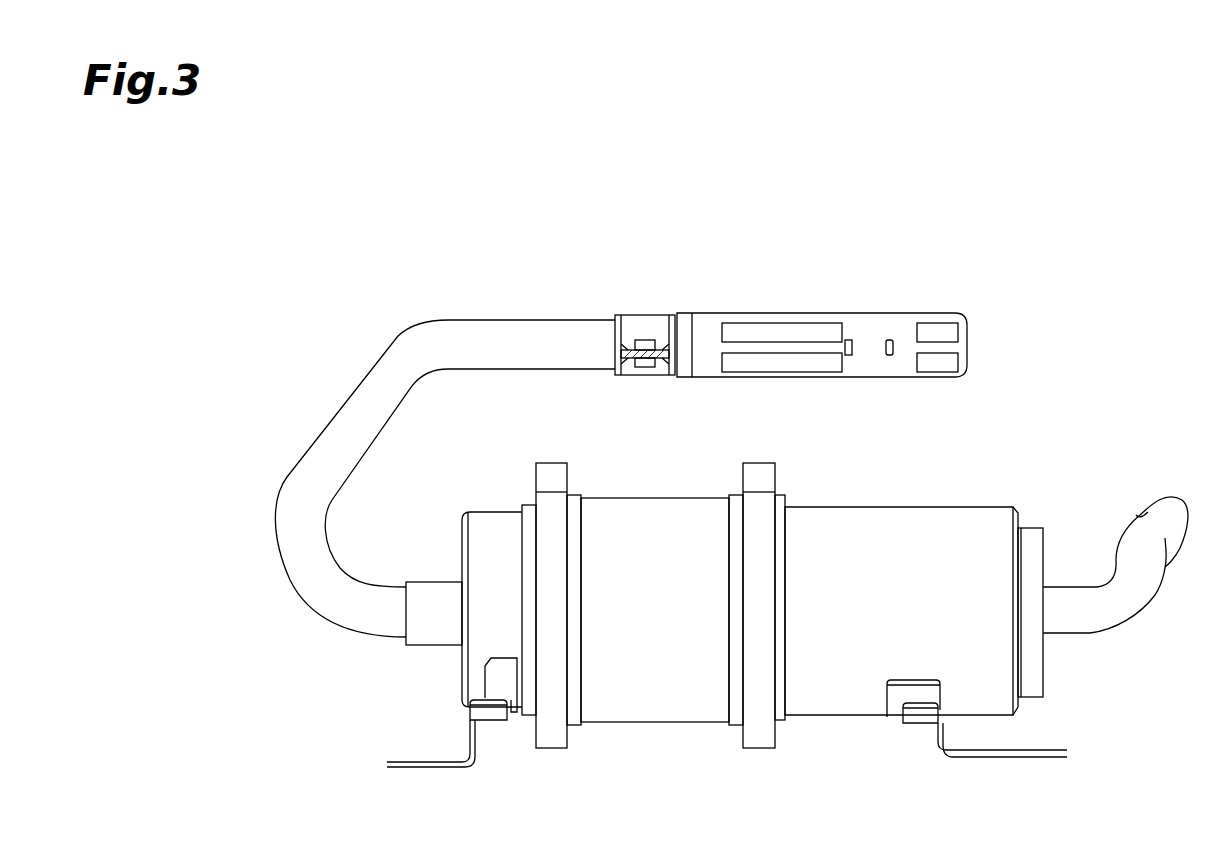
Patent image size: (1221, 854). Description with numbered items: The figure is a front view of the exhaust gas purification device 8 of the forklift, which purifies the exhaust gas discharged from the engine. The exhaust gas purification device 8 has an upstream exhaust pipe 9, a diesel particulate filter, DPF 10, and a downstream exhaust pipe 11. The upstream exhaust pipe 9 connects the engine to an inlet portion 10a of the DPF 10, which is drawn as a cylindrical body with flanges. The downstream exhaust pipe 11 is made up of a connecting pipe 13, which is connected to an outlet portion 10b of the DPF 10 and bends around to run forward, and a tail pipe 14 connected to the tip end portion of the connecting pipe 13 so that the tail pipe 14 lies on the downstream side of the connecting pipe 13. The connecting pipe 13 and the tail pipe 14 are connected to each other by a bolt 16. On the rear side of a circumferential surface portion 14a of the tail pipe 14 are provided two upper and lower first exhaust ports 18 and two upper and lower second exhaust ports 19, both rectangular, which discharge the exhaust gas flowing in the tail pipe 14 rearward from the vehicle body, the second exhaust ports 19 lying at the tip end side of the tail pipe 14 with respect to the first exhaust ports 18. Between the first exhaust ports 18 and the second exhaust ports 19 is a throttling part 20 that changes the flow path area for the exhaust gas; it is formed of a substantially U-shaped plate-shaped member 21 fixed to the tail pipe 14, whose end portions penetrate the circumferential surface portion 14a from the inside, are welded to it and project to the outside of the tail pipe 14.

The exhaust gas purification device 8 is at (497, 232).
The upstream exhaust pipe 9 is at (1140, 598).
The diesel particulate filter (DPF) 10 is at (632, 703).
The inlet portion 10a is at (1035, 650).
The outlet portion 10b is at (490, 528).
The downstream exhaust pipe 11 is at (403, 320).
The connecting pipe 13 is at (330, 407).
The tail pipe 14 is at (808, 312).
The circumferential surface portion 14a is at (870, 320).
The bolt 16 is at (644, 338).
The first exhaust port 18 is at (757, 334).
The second exhaust port 19 is at (940, 332).
The throttling part 20 is at (848, 347).
The plate-shaped member 21 is at (880, 350).